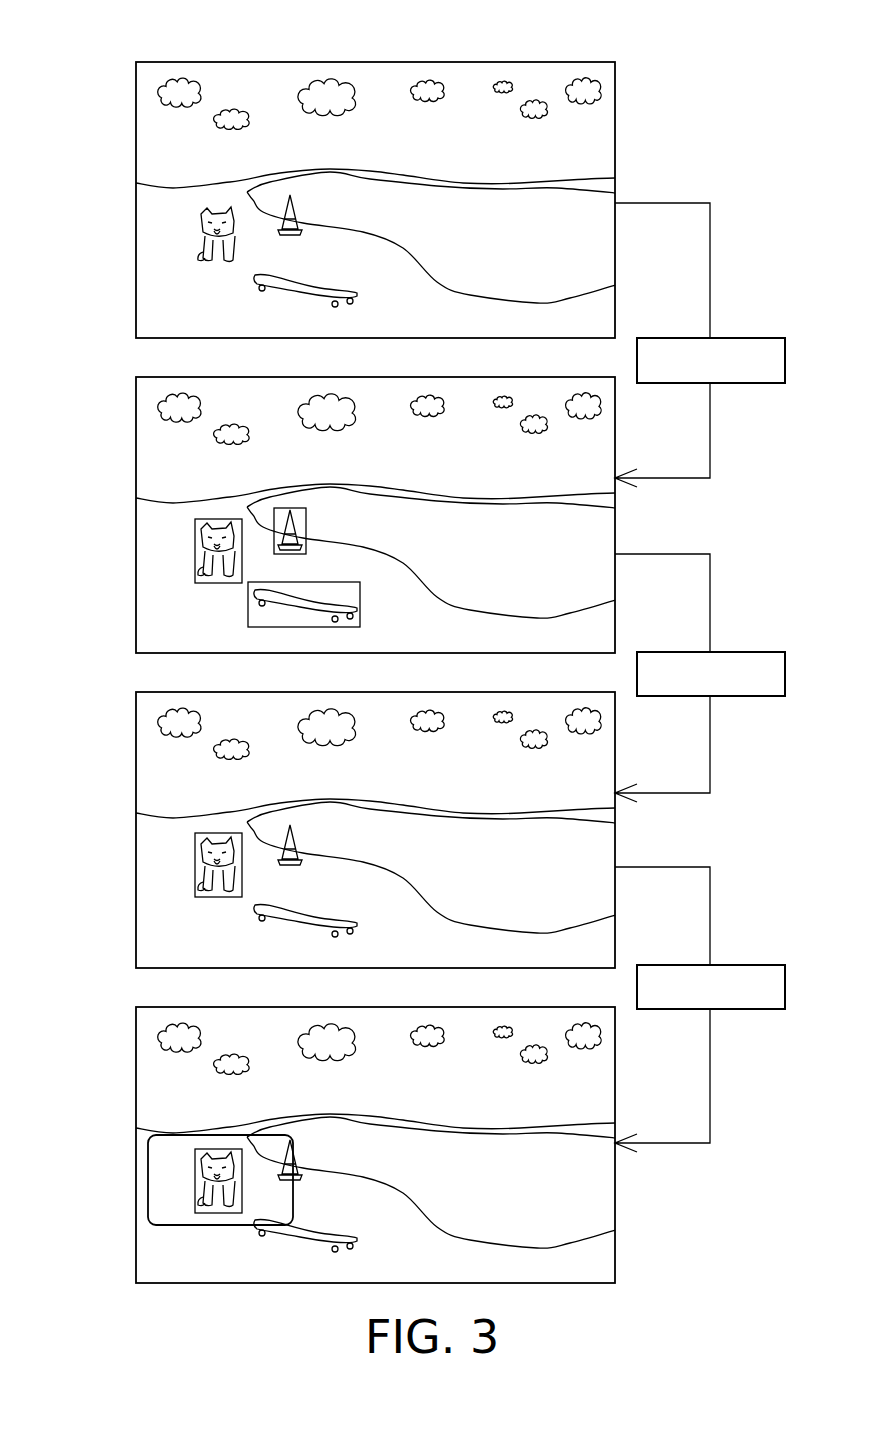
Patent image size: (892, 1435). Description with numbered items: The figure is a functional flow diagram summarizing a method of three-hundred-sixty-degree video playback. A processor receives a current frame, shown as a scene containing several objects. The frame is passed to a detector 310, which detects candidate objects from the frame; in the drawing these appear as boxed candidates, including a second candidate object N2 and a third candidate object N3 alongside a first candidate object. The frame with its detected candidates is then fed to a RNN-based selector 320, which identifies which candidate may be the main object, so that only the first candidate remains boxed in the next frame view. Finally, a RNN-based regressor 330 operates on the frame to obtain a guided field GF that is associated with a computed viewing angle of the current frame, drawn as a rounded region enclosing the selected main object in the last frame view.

The candidate object N2 is at (273, 520).
The candidate object N3 is at (248, 610).
The guided field GF is at (148, 1201).
The detector 310 is at (754, 338).
The RNN-based selector 320 is at (754, 652).
The RNN-based regressor 330 is at (754, 965).